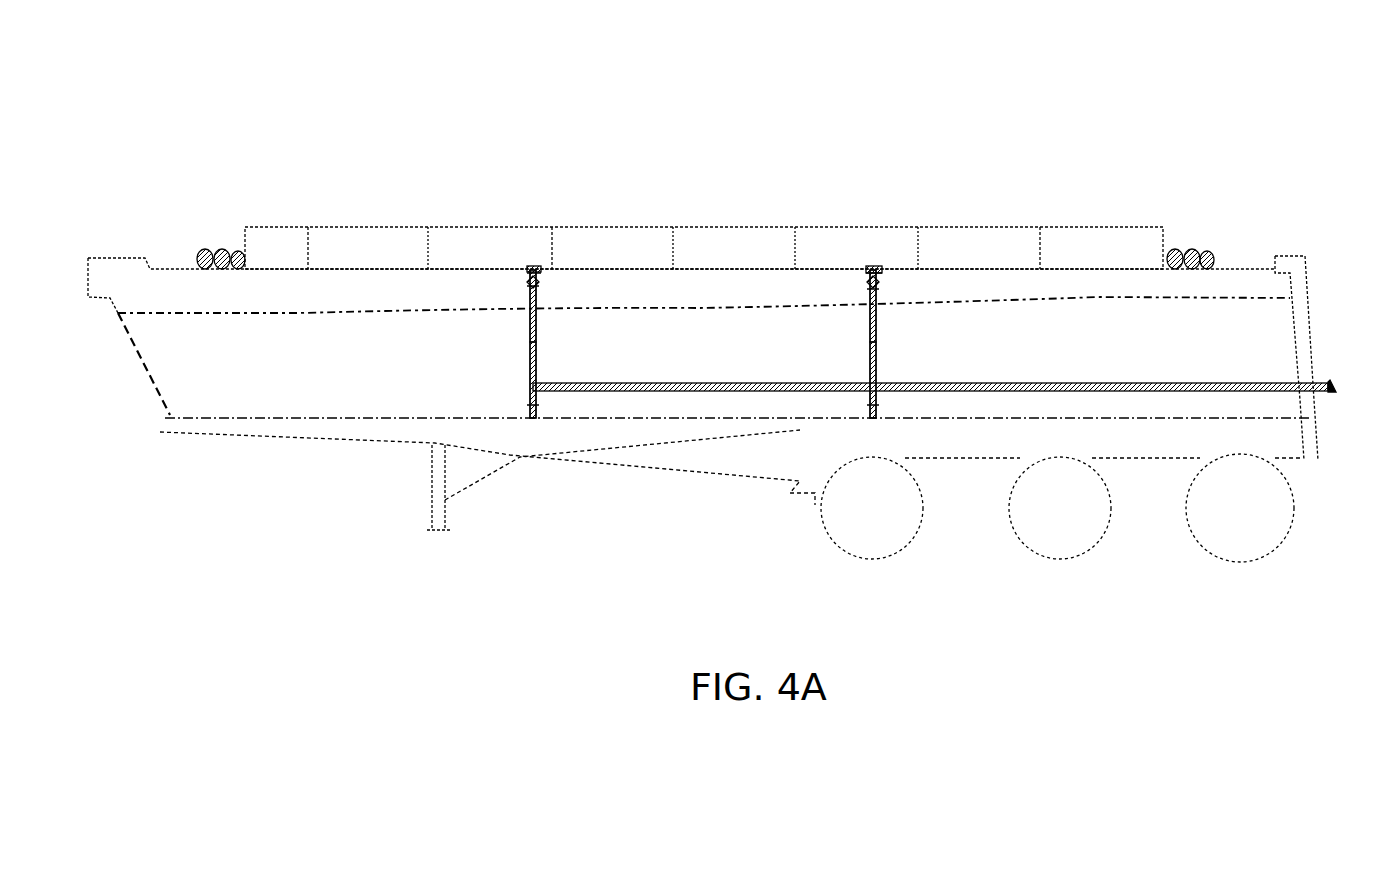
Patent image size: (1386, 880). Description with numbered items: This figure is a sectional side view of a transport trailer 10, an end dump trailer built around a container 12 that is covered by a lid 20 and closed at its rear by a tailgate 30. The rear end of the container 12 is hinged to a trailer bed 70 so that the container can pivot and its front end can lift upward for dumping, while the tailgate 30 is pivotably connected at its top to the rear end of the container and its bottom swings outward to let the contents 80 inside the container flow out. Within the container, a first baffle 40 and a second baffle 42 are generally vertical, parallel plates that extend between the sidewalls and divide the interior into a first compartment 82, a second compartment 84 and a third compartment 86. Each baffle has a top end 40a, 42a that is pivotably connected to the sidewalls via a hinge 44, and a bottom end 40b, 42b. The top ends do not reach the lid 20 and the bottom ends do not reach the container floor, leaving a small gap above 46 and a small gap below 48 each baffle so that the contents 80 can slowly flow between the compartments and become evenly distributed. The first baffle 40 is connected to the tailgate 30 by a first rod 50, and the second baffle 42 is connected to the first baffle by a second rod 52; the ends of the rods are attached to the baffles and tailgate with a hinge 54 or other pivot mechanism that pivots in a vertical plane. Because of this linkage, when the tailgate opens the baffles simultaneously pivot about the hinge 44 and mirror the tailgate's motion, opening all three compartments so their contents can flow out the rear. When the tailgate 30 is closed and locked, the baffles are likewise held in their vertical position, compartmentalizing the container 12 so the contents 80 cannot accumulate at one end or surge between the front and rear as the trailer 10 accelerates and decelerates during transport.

The transport trailer 10 is at (892, 92).
The container 12 is at (1225, 268).
The lid 20 is at (1085, 227).
The tailgate 30 is at (1296, 257).
The first baffle 40 is at (878, 343).
The top end of first baffle 40a is at (868, 301).
The bottom end of first baffle 40b is at (877, 403).
The second baffle 42 is at (537, 343).
The top end of second baffle 42a is at (530, 300).
The bottom end of second baffle 42b is at (538, 400).
The hinge 44 is at (527, 286).
The gap above baffle 46 is at (539, 277).
The gap below baffle 48 is at (537, 405).
The first rod 50 is at (1118, 390).
The second rod 52 is at (706, 387).
The hinge 54 is at (545, 387).
The trailer bed 70 is at (1280, 461).
The contents 80 is at (270, 317).
The first compartment 82 is at (1086, 343).
The second compartment 84 is at (703, 346).
The third compartment 86 is at (350, 362).